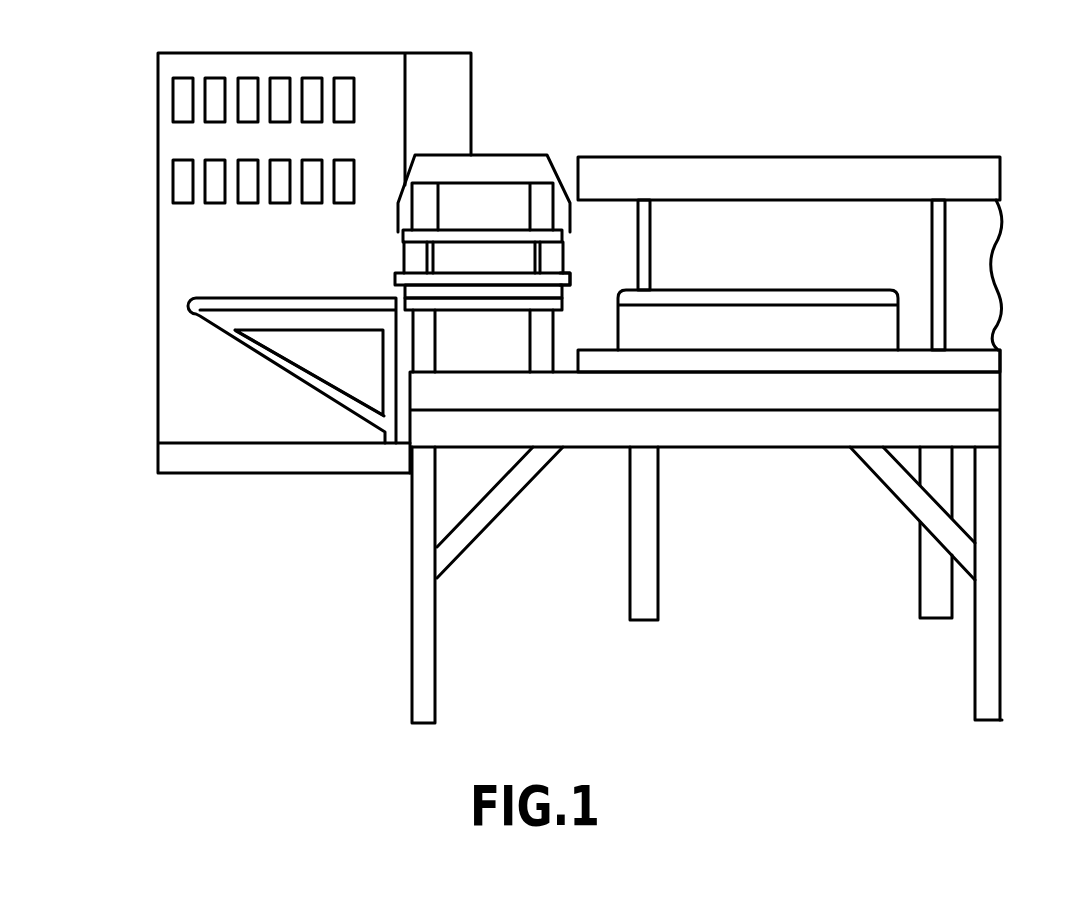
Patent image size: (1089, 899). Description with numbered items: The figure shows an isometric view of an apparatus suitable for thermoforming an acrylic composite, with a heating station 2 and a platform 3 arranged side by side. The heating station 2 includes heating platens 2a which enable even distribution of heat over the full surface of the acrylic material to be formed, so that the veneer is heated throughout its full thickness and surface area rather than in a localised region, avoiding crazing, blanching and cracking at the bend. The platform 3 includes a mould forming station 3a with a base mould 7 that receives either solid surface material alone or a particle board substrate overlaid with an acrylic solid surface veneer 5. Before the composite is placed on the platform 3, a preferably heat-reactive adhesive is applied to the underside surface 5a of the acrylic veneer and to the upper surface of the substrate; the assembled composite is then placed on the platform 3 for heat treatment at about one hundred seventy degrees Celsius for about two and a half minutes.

The heating station 2 is at (500, 138).
The heating platens 2a is at (452, 230).
The platform 3 is at (1000, 352).
The mould forming station 3a is at (766, 252).
The acrylic solid surface veneer 5 is at (396, 275).
The underside surface of the acrylic veneer 5a is at (572, 283).
The base mould 7 is at (770, 338).